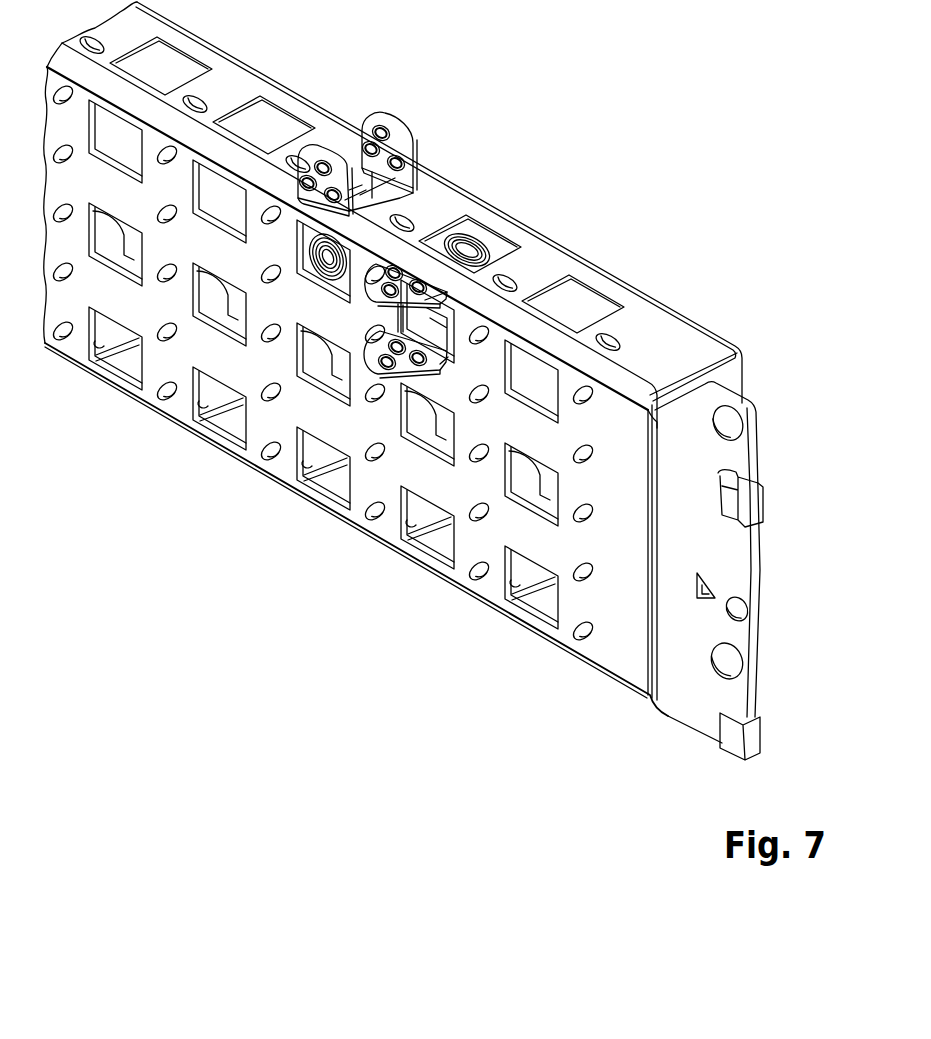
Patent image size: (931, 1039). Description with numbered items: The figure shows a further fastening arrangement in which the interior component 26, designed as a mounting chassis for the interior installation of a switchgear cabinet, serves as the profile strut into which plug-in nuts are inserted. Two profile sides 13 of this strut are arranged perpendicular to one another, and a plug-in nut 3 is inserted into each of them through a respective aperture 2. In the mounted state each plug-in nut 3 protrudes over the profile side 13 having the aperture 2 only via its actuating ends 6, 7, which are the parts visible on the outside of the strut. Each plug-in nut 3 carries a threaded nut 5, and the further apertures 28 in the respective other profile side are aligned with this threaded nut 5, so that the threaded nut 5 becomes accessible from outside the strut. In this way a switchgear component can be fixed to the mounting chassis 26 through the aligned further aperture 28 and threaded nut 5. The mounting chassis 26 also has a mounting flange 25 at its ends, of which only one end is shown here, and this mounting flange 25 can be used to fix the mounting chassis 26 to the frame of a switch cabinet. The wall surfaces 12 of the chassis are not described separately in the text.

The interior component 26 is at (678, 196).
The front wall with square openings 12 is at (436, 203).
The profile side 13 is at (657, 338).
The threaded nut 5 is at (338, 317).
The further apertures 28 is at (496, 244).
The plug-in nut 3 is at (327, 313).
The actuating end 6 is at (307, 150).
The actuating end 7 is at (413, 132).
The aperture 2 is at (343, 170).
The mounting flange 25 is at (744, 579).